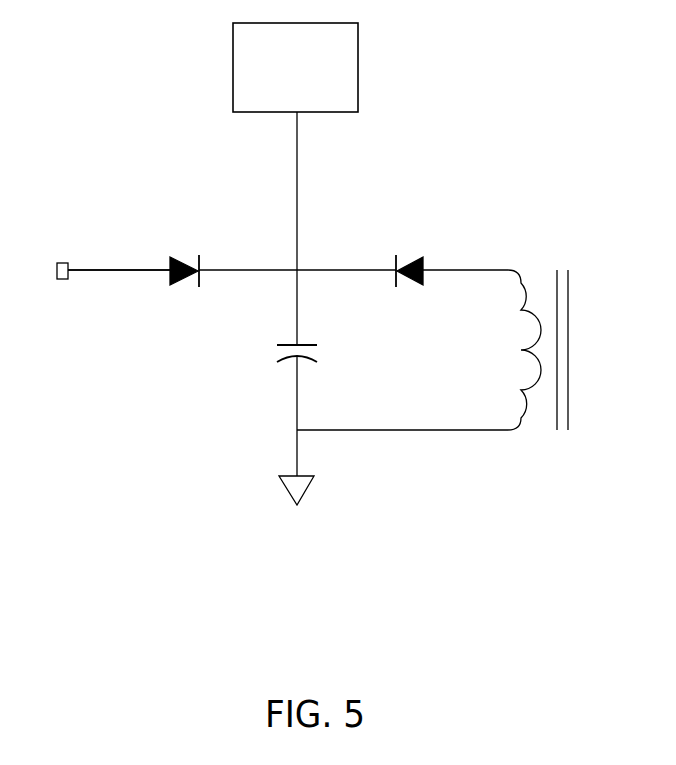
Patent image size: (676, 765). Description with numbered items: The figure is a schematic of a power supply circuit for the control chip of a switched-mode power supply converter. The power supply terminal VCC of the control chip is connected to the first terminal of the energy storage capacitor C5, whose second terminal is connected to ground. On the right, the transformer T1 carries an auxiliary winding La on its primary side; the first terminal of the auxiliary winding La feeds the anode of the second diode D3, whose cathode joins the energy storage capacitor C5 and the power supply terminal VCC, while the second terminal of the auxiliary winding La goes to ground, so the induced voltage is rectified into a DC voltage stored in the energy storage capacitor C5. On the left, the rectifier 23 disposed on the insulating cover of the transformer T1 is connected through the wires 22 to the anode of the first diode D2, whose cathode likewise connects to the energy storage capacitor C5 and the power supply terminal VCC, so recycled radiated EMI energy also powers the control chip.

The wires 22 is at (102, 270).
The rectifier 23 is at (62, 279).
The first diode D2 is at (183, 254).
The second diode D3 is at (409, 254).
The energy storage capacitor C5 is at (317, 385).
The auxiliary winding La is at (419, 350).
The transformer T1 is at (567, 330).
The power supply terminal VCC is at (296, 184).